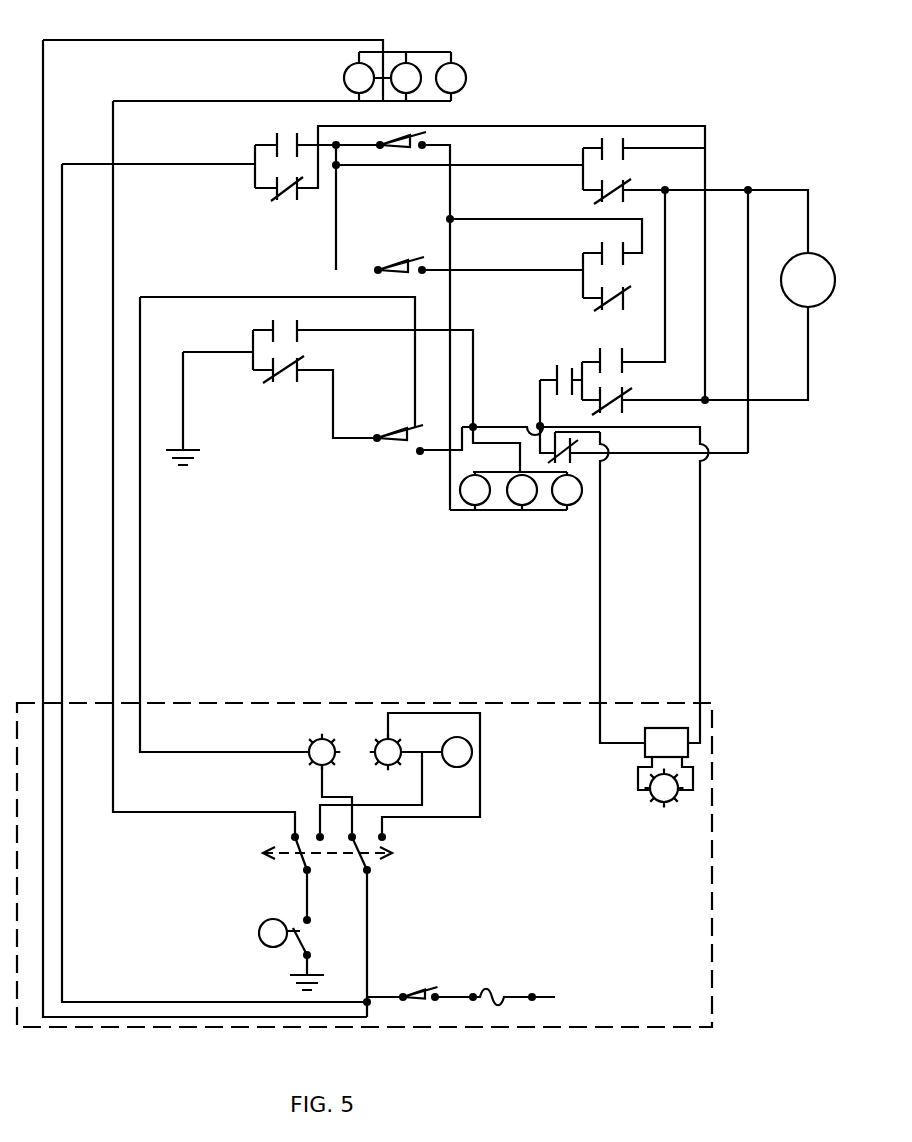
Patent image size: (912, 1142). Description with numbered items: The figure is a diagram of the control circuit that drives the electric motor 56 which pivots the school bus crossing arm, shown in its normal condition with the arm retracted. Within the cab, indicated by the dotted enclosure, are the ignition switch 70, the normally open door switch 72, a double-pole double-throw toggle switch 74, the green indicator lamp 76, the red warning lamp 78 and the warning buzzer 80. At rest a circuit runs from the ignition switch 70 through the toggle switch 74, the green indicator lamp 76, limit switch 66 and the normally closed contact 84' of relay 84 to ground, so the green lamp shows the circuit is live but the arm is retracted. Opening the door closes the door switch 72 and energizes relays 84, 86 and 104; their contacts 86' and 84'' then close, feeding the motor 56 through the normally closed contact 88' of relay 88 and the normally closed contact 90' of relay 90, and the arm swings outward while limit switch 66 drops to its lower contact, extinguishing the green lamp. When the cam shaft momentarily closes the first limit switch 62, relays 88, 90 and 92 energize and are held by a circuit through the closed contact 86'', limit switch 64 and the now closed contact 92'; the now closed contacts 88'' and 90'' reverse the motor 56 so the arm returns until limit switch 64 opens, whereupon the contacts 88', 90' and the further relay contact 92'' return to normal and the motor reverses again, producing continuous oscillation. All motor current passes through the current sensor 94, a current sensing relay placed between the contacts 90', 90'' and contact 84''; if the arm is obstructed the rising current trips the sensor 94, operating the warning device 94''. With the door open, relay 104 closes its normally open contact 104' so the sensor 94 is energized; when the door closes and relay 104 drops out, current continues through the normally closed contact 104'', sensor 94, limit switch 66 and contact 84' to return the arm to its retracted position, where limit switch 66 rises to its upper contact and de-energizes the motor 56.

The electric motor 56 is at (826, 288).
The first limit switch 62 is at (410, 127).
The limit switch 64 is at (396, 265).
The limit switch 66 is at (400, 446).
The ignition switch 70 is at (413, 1000).
The door switch 72 is at (292, 926).
The double-pole double-throw switch 74 is at (384, 870).
The green indicator lamp 76 is at (318, 735).
The red warning lamp 78 is at (378, 748).
The warning buzzer 80 is at (466, 750).
The relay 84 is at (407, 50).
The normally closed contact of relay 84 84' is at (263, 393).
The normally open contact of relay 84 84'' is at (256, 340).
The relay 86 is at (370, 76).
The normally open contact of relay 86 86' is at (262, 151).
The normally closed contact of relay 86 86'' is at (267, 210).
The relay 88 is at (553, 621).
The normally closed contact of relay 88 88' is at (637, 181).
The normally open contact of relay 88 88'' is at (637, 141).
The relay 90 is at (508, 517).
The normally closed contact of relay 90 90' is at (632, 407).
The normally open contact of relay 90 90'' is at (588, 366).
The relay 92 is at (572, 521).
The normally open contact of relay 92 92' is at (591, 262).
The contact of relay 92 92'' is at (599, 311).
The current sensor 94 is at (665, 730).
The warning device 94'' is at (667, 811).
The relay 104 is at (487, 76).
The normally open contact of relay 104 104' is at (530, 347).
The normally closed contact of relay 104 104'' is at (613, 467).